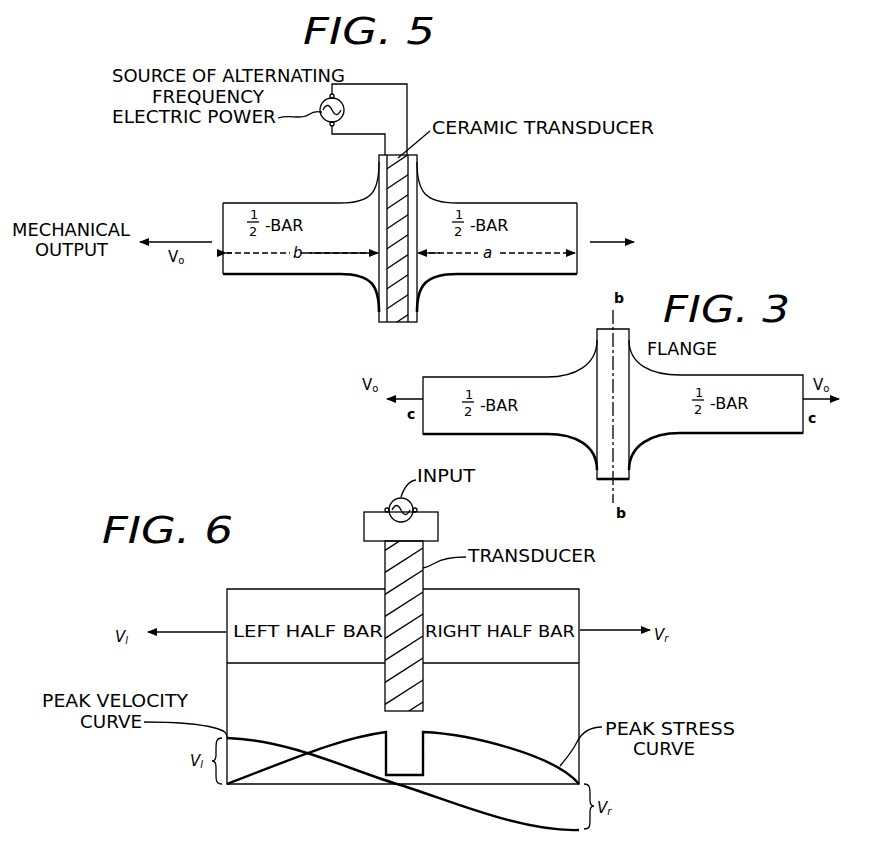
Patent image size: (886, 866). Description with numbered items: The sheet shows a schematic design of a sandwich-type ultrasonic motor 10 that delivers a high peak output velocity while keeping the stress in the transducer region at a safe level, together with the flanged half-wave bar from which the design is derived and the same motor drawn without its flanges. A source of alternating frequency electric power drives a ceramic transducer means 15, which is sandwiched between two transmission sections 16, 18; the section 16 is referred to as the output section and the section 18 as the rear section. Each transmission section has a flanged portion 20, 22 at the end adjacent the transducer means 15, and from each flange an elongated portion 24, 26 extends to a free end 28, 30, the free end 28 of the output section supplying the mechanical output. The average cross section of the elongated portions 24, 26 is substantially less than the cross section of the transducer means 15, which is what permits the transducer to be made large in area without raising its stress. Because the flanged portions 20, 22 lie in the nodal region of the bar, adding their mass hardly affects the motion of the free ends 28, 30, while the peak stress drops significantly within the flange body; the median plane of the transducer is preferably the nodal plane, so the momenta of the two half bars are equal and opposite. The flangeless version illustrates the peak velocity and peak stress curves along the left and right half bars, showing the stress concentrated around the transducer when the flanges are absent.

The ultrasonic motor 10 is at (397, 251).
The transducer means 15 is at (404, 328).
The transmission section 16 is at (261, 244).
The transmission section 18 is at (534, 223).
The flanged portion 20 is at (379, 307).
The flanged portion 22 is at (419, 307).
The elongated portion 24 is at (276, 191).
The elongated portion 26 is at (500, 190).
The free end 28 is at (223, 225).
The free end 30 is at (577, 224).